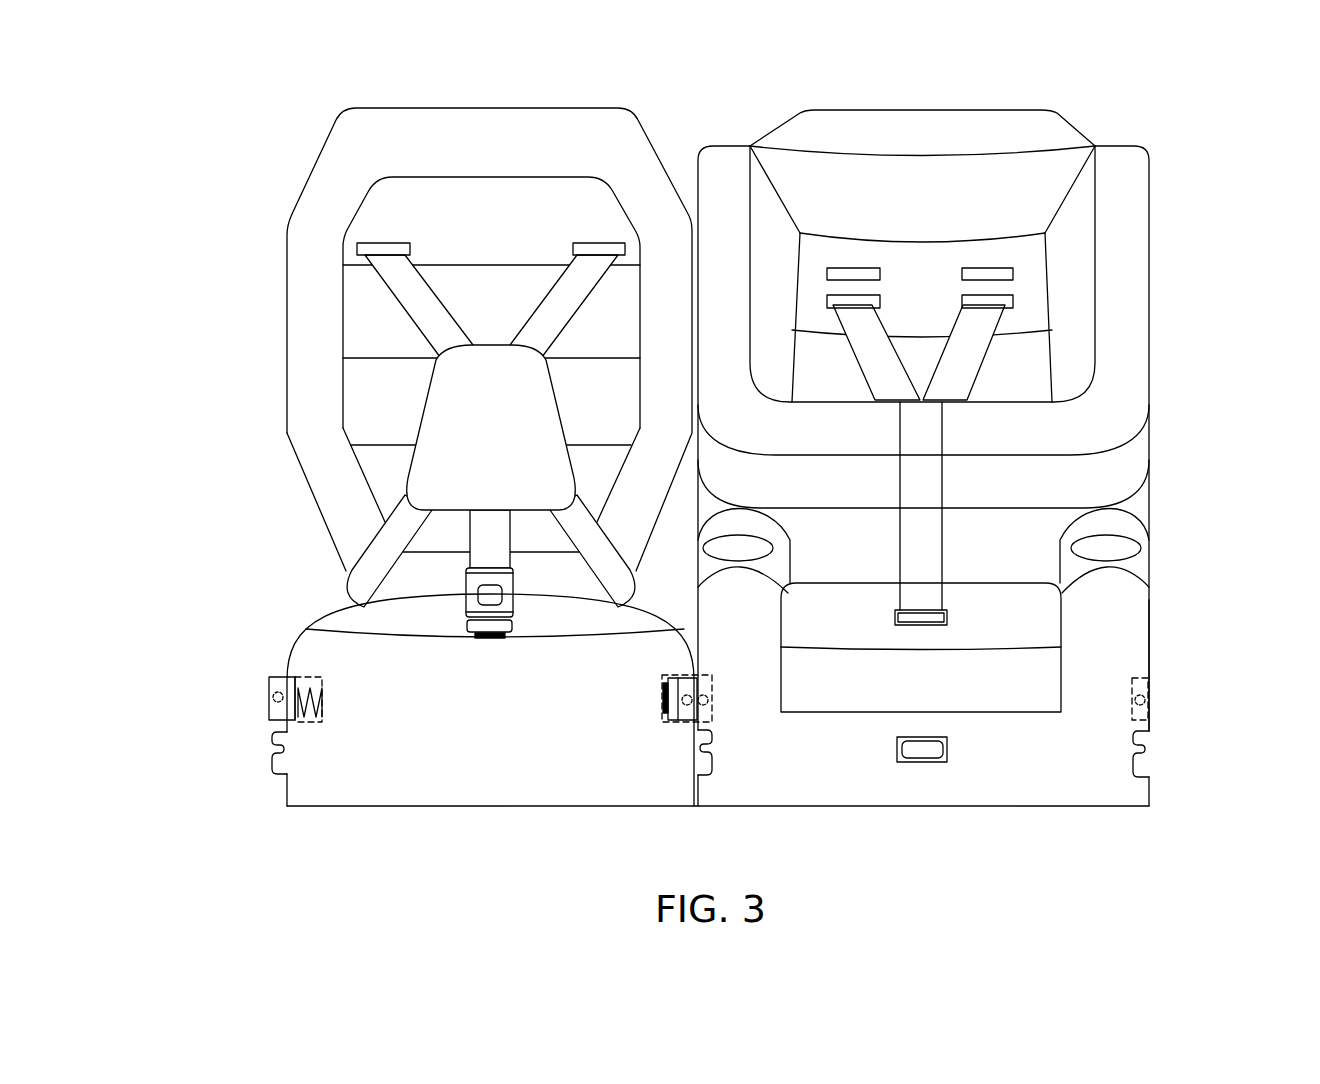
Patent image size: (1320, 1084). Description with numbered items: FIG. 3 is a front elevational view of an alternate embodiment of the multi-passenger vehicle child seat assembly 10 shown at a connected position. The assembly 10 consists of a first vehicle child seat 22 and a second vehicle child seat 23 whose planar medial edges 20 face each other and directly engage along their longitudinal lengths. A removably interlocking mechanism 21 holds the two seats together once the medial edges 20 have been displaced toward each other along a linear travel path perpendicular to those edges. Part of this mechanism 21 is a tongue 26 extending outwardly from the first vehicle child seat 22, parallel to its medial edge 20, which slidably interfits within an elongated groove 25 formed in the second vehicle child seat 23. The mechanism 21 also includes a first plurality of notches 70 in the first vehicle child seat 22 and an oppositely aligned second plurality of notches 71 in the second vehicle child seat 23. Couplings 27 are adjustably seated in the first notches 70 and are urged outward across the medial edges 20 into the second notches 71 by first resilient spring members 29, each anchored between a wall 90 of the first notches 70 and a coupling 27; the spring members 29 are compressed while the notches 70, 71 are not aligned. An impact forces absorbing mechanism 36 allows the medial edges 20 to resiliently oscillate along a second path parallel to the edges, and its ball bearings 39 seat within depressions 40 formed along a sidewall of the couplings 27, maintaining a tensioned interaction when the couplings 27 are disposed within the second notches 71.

The multi-passenger vehicle child seat assembly 10 is at (1225, 197).
The medial edges 20 is at (290, 653).
The removably interlocking mechanism 21 is at (268, 663).
The first vehicle child seat 22 is at (450, 821).
The second vehicle child seat 23 is at (955, 821).
The elongated groove 25 is at (713, 753).
The tongue 26 is at (273, 757).
The couplings 27 is at (269, 692).
The first resilient spring members 29 is at (293, 670).
The impact forces absorbing mechanism 36 is at (730, 721).
The ball bearings 39 is at (1146, 698).
The depressions 40 is at (270, 703).
The first plurality of notches 70 is at (298, 713).
The second plurality of notches 71 is at (1147, 690).
The wall of the first plurality of notches 90 is at (320, 687).